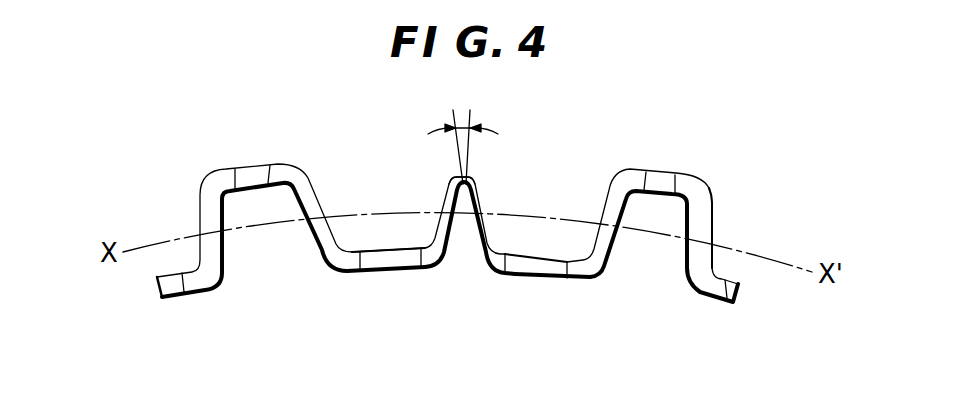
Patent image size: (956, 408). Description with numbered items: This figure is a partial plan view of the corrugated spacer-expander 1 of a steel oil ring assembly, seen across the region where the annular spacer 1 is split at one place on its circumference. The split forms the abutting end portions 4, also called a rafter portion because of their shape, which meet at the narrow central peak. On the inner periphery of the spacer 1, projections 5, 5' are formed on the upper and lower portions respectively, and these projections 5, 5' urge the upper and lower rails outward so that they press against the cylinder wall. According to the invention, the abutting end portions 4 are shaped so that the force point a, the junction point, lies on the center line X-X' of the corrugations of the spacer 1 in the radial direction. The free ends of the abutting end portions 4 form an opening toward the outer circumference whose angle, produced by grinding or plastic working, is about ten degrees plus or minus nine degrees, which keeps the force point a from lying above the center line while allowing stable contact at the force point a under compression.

The spacer-expander 1 is at (700, 215).
The abutting end portions 4 is at (459, 259).
The projection 5 is at (547, 307).
The projection 5' is at (509, 307).
The force point a is at (462, 214).